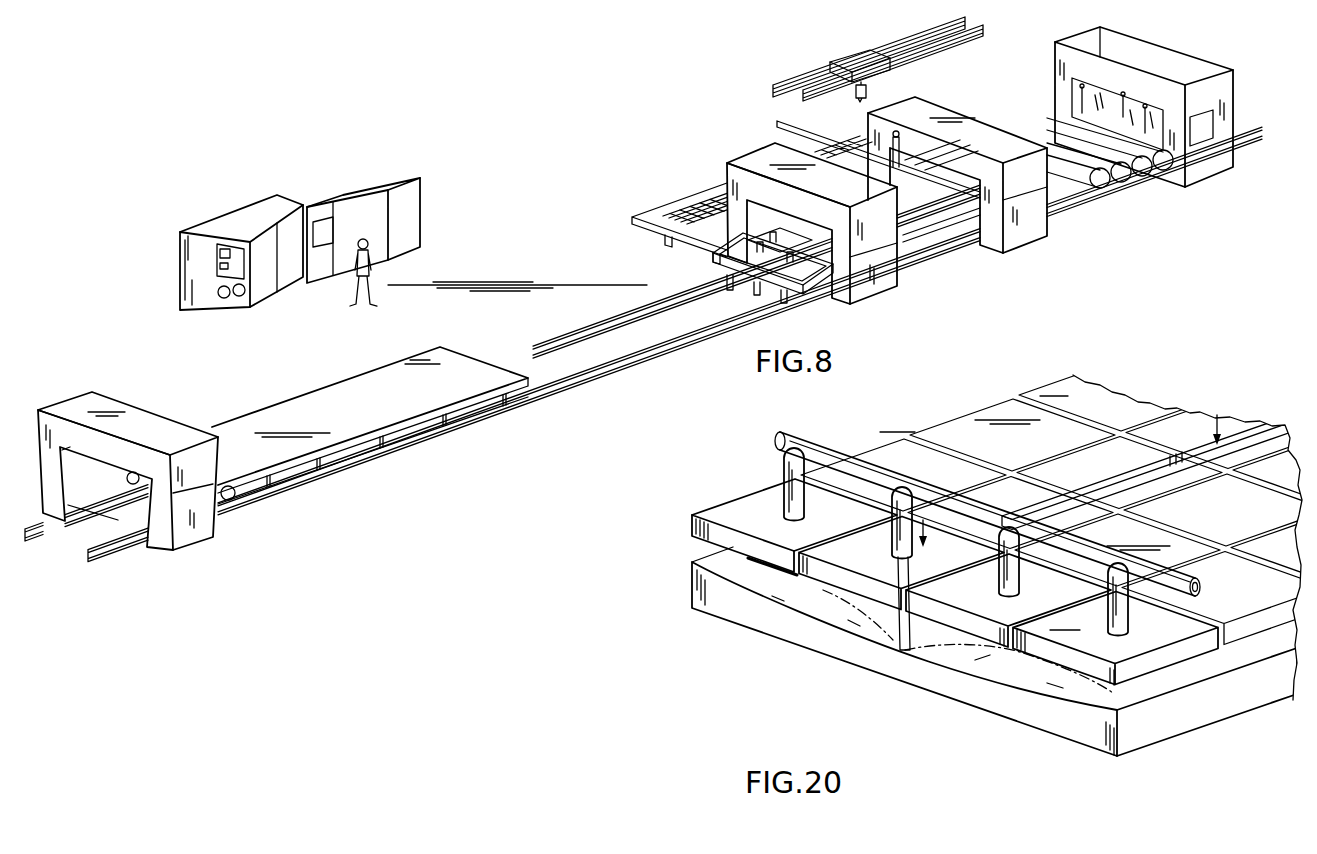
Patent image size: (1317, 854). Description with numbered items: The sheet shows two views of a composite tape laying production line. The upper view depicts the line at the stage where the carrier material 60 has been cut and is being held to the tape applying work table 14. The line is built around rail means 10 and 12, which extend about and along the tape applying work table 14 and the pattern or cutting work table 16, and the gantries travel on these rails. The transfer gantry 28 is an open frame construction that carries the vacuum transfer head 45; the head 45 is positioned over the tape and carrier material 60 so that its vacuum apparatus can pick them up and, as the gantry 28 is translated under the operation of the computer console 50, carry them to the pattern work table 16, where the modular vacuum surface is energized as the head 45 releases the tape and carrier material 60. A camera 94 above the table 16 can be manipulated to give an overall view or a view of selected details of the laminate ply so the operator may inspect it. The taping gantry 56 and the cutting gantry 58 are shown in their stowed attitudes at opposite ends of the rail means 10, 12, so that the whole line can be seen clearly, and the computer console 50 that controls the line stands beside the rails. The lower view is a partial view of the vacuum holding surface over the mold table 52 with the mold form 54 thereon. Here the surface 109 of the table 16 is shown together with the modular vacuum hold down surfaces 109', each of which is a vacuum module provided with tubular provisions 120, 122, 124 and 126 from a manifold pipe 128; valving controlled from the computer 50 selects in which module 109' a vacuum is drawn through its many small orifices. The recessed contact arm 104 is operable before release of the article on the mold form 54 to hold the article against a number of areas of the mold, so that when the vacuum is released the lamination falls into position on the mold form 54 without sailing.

In FIG. 8, the rail means 10 is at (591, 337).
In FIG. 8, the rail means 12 is at (648, 355).
In FIG. 8, the tape applying work table 14 is at (405, 427).
In FIG. 8, the pattern or cutting work table 16 is at (933, 232).
In FIG. 8, the transfer gantry 28 is at (967, 113).
In FIG. 8, the vacuum transfer head 45 is at (738, 262).
In FIG. 8, the computer console 50 is at (294, 199).
In FIG. 20, the mold table 52 is at (1162, 728).
In FIG. 20, the mold form 54 is at (995, 668).
In FIG. 8, the taping gantry 56 is at (123, 408).
In FIG. 8, the cutting gantry 58 is at (1160, 46).
In FIG. 8, the carrier material 60 is at (350, 386).
In FIG. 8, the camera 94 is at (878, 96).
In FIG. 20, the recessed contact arm 104 is at (1273, 436).
In FIG. 20, the surface 109 is at (759, 527).
In FIG. 20, the modular vacuum hold down surface 109' is at (1051, 522).
In FIG. 20, the tubular provision 120 is at (790, 518).
In FIG. 20, the tubular provision 122 is at (893, 544).
In FIG. 20, the tubular provision 124 is at (1007, 580).
In FIG. 20, the tubular provision 126 is at (1140, 632).
In FIG. 20, the manifold pipe 128 is at (782, 447).